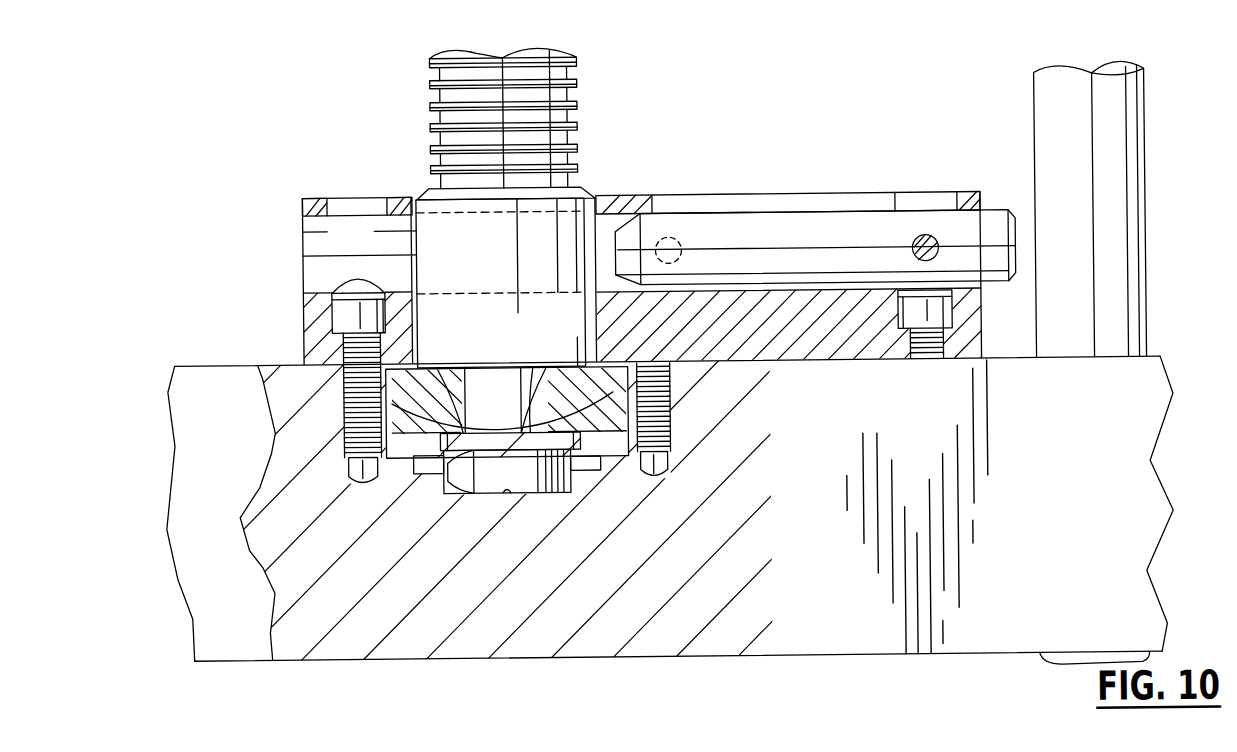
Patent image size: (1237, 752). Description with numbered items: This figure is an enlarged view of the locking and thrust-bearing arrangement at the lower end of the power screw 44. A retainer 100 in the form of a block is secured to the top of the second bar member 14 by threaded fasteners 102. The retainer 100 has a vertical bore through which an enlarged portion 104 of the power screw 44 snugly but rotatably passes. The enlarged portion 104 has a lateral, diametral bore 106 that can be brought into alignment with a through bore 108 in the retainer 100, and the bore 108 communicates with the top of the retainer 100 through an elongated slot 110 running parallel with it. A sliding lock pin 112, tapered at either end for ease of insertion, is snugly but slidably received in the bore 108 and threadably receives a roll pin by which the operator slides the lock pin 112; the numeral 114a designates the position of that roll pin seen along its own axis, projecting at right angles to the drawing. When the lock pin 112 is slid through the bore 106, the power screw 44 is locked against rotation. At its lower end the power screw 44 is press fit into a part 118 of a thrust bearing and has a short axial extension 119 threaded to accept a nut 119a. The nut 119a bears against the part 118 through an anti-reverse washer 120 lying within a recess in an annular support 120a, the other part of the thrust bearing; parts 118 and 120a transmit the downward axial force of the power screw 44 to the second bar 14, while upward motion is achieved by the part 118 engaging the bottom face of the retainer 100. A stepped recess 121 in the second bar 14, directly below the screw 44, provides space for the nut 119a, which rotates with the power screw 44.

The second bar member 14 is at (227, 376).
The power screw 44 is at (578, 83).
The retainer 100 is at (976, 322).
The threaded fasteners 102 is at (339, 315).
The enlarged portion 104 is at (582, 187).
The lateral diametral bore 106 is at (514, 212).
The through bore 108 is at (309, 313).
The elongated slot 110 is at (742, 204).
The sliding lock pin 112 is at (994, 222).
The roll pin position 114a is at (925, 241).
The thrust bearing part 118 is at (345, 405).
The short axial extension 119 is at (527, 385).
The nut 119a is at (447, 476).
The anti-reverse washer 120 is at (567, 468).
The annular support 120a is at (452, 391).
The stepped recess 121 is at (502, 490).